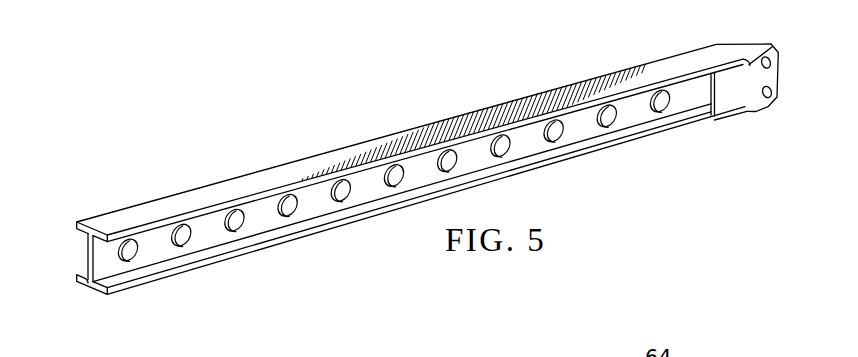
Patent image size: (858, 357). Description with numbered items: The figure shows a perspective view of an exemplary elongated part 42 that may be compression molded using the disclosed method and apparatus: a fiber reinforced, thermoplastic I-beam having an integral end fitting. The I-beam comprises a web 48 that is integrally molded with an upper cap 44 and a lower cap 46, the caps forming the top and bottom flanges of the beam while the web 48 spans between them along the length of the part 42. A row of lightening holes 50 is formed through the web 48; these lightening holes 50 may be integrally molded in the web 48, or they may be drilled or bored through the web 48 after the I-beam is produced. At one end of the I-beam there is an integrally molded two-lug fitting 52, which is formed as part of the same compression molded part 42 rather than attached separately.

The elongated part 42 is at (356, 81).
The upper cap 44 is at (170, 203).
The lower cap 46 is at (224, 266).
The web 48 is at (258, 217).
The lightening holes 50 is at (557, 131).
The 2-lug fitting 52 is at (770, 79).